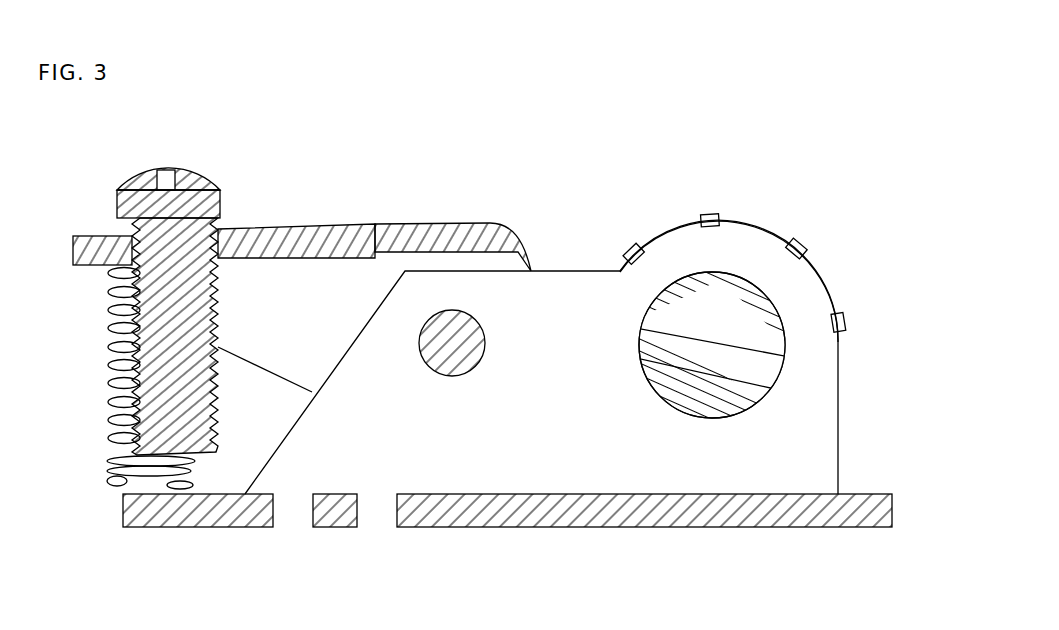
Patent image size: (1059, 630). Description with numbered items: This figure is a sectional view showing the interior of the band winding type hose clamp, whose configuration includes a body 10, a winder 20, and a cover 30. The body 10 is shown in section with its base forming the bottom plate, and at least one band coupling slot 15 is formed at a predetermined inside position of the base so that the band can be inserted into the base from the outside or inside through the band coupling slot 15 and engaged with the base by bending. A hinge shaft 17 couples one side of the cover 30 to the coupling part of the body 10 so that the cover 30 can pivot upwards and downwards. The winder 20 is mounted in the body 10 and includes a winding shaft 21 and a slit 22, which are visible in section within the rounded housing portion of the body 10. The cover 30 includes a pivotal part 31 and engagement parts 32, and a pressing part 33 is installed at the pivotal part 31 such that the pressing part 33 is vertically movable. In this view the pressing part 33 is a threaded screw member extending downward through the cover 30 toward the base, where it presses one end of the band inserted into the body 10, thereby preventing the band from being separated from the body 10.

The body 10 is at (507, 416).
The band coupling slot 15 is at (378, 512).
The hinge shaft 17 is at (455, 372).
The winder 20 is at (776, 279).
The winding shaft 21 is at (733, 277).
The slit 22 is at (793, 285).
The cover 30 is at (307, 278).
The pivotal part 31 is at (420, 222).
The engagement parts 32 is at (265, 283).
The pressing part 33 is at (228, 223).